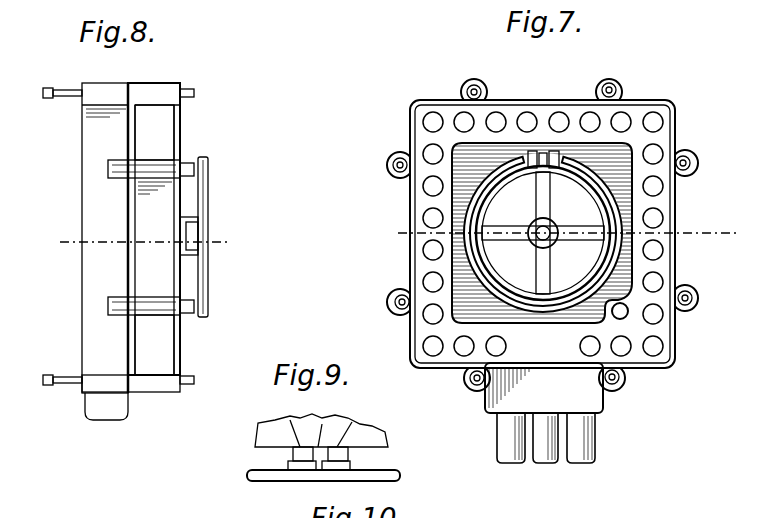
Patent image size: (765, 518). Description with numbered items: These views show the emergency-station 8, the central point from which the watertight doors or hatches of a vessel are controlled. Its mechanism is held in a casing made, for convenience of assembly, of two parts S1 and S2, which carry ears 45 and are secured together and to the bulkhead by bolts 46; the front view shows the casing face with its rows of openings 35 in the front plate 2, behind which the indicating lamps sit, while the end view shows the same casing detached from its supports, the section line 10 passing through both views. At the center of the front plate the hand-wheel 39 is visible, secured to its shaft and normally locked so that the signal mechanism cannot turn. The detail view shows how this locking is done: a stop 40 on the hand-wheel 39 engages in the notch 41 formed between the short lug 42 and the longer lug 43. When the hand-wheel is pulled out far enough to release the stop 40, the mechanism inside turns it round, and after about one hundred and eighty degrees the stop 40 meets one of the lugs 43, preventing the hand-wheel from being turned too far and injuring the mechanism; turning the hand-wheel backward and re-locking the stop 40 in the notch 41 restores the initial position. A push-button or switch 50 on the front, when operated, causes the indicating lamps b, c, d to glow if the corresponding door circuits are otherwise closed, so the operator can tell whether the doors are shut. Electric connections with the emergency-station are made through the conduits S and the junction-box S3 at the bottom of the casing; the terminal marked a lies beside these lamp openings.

In FIG. 7, the front plate 2 is at (618, 163).
In FIG. 7, the emergency-station 8 is at (512, 464).
In FIG. 8, the section line 10 is at (144, 241).
In FIG. 7, the section line 10 is at (555, 233).
In FIG. 7, the openings 35 is at (655, 216).
In FIG. 8, the hand-wheel 39 is at (210, 186).
In FIG. 7, the hand-wheel 39 is at (575, 292).
In FIG. 9, the hand-wheel 39 is at (290, 470).
In FIG. 8, the stop 40 is at (200, 160).
In FIG. 9, the stop 40 is at (348, 458).
In FIG. 7, the notch 41 is at (543, 151).
In FIG. 9, the notch 41 is at (318, 446).
In FIG. 7, the short lug 42 is at (557, 150).
In FIG. 9, the short lug 42 is at (338, 446).
In FIG. 8, the longer lug 43 is at (186, 161).
In FIG. 7, the longer lug 43 is at (532, 150).
In FIG. 9, the longer lug 43 is at (298, 446).
In FIG. 8, the ears 45 is at (115, 179).
In FIG. 7, the ears 45 is at (394, 162).
In FIG. 8, the bolts 46 is at (63, 100).
In FIG. 7, the bolts 46 is at (473, 84).
In FIG. 7, the push-button or switch 50 is at (628, 316).
In FIG. 8, the conduits S is at (146, 244).
In FIG. 7, the conduits S is at (561, 234).
In FIG. 8, the casing part S1 is at (154, 238).
In FIG. 8, the rear portion of casing S2 is at (105, 251).
In FIG. 7, the junction-box S3 is at (544, 388).
In FIG. 7, the terminal a is at (507, 346).
In FIG. 7, the indicating-lamp b is at (462, 357).
In FIG. 7, the indicating-lamp c is at (431, 357).
In FIG. 7, the indicating-lamp d is at (427, 318).